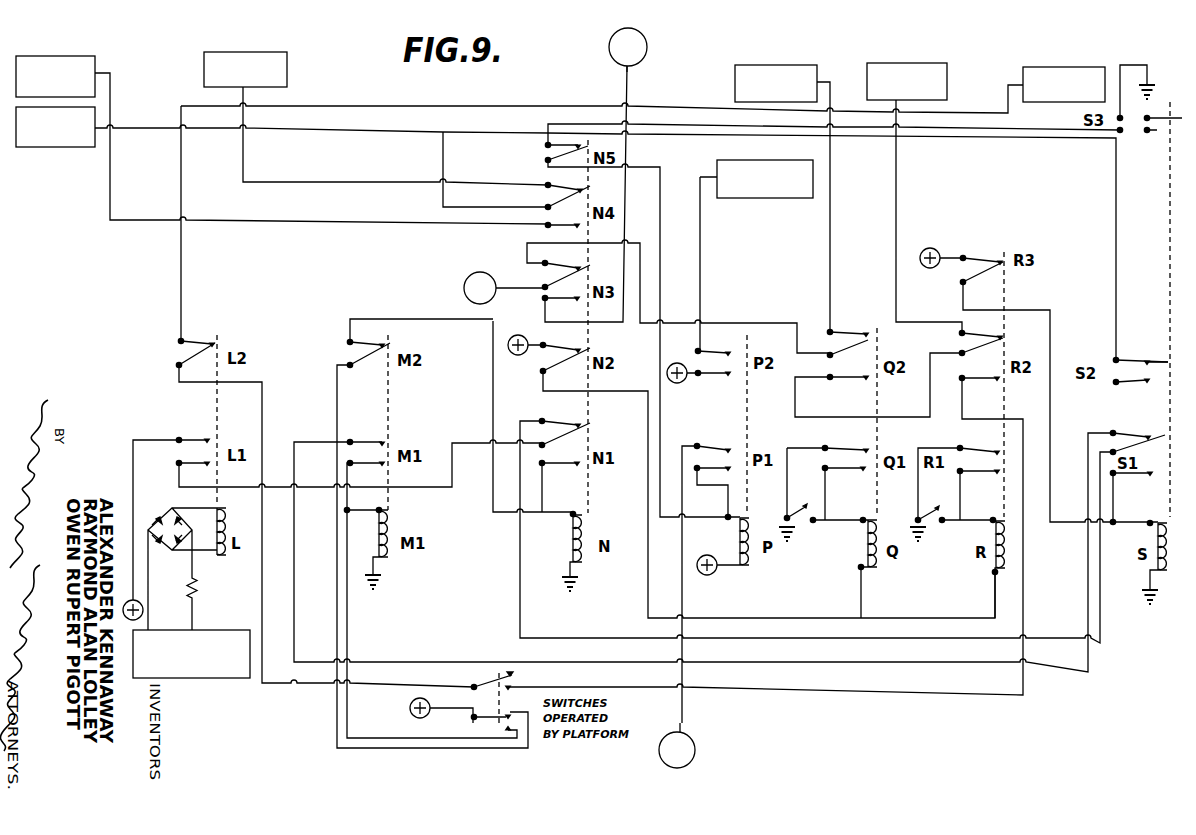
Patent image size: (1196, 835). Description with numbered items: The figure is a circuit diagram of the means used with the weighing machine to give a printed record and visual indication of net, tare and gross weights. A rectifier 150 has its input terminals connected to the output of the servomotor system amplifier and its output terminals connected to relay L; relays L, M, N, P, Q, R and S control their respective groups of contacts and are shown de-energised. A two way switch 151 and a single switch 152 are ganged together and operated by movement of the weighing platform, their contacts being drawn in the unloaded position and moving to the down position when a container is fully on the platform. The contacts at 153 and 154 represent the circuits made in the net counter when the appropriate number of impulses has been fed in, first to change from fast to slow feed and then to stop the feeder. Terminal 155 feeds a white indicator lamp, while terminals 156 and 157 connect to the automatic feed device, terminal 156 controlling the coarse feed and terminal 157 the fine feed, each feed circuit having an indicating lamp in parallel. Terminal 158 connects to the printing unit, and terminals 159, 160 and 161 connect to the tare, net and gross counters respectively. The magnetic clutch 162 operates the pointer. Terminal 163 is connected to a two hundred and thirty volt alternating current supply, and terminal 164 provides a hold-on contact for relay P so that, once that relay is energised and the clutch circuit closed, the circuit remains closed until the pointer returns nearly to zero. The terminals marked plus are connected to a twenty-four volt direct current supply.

The rectifier 150 is at (191, 593).
The two way switch 151 is at (461, 719).
The single switch 152 is at (480, 678).
The contacts 153 is at (811, 525).
The contacts 154 is at (943, 526).
The terminal 155 is at (628, 50).
The terminal 156 is at (773, 65).
The terminal 157 is at (933, 57).
The terminal 158 is at (1090, 67).
The terminal 159 is at (57, 52).
The terminal 160 is at (287, 62).
The terminal 161 is at (64, 148).
The magnetic clutch 162 is at (782, 160).
The terminal 163 is at (480, 288).
The terminal 164 is at (677, 745).